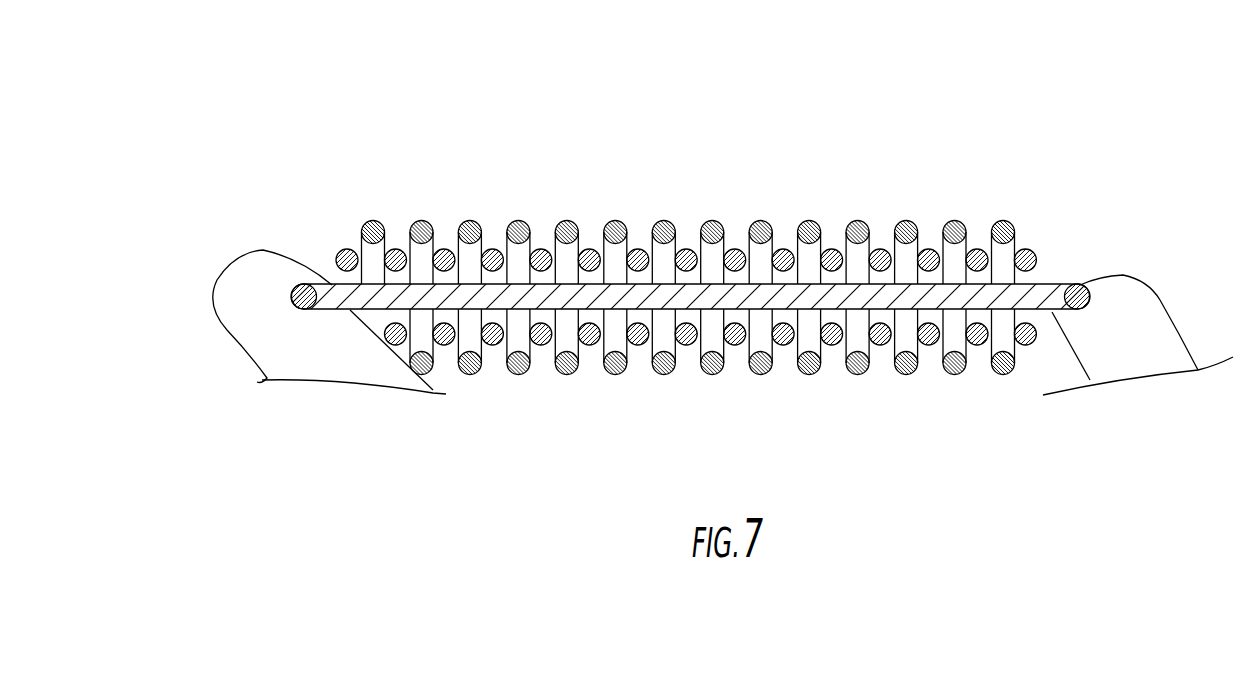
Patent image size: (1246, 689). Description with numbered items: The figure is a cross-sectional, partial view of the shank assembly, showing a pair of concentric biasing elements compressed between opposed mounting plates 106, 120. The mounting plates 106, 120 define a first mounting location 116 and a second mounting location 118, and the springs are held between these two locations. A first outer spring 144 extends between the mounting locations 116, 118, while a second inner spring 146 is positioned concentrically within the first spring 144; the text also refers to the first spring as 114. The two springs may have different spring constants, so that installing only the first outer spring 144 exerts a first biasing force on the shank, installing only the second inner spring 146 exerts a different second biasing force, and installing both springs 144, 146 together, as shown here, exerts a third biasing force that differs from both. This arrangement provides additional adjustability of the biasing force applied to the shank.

The mounting plate 106 is at (1145, 295).
The first spring 114 is at (327, 95).
The first mounting location 116 is at (1088, 288).
The second mounting location 118 is at (302, 283).
The mounting plate 120 is at (240, 275).
The first outer spring 144 is at (518, 221).
The second inner spring 146 is at (636, 250).